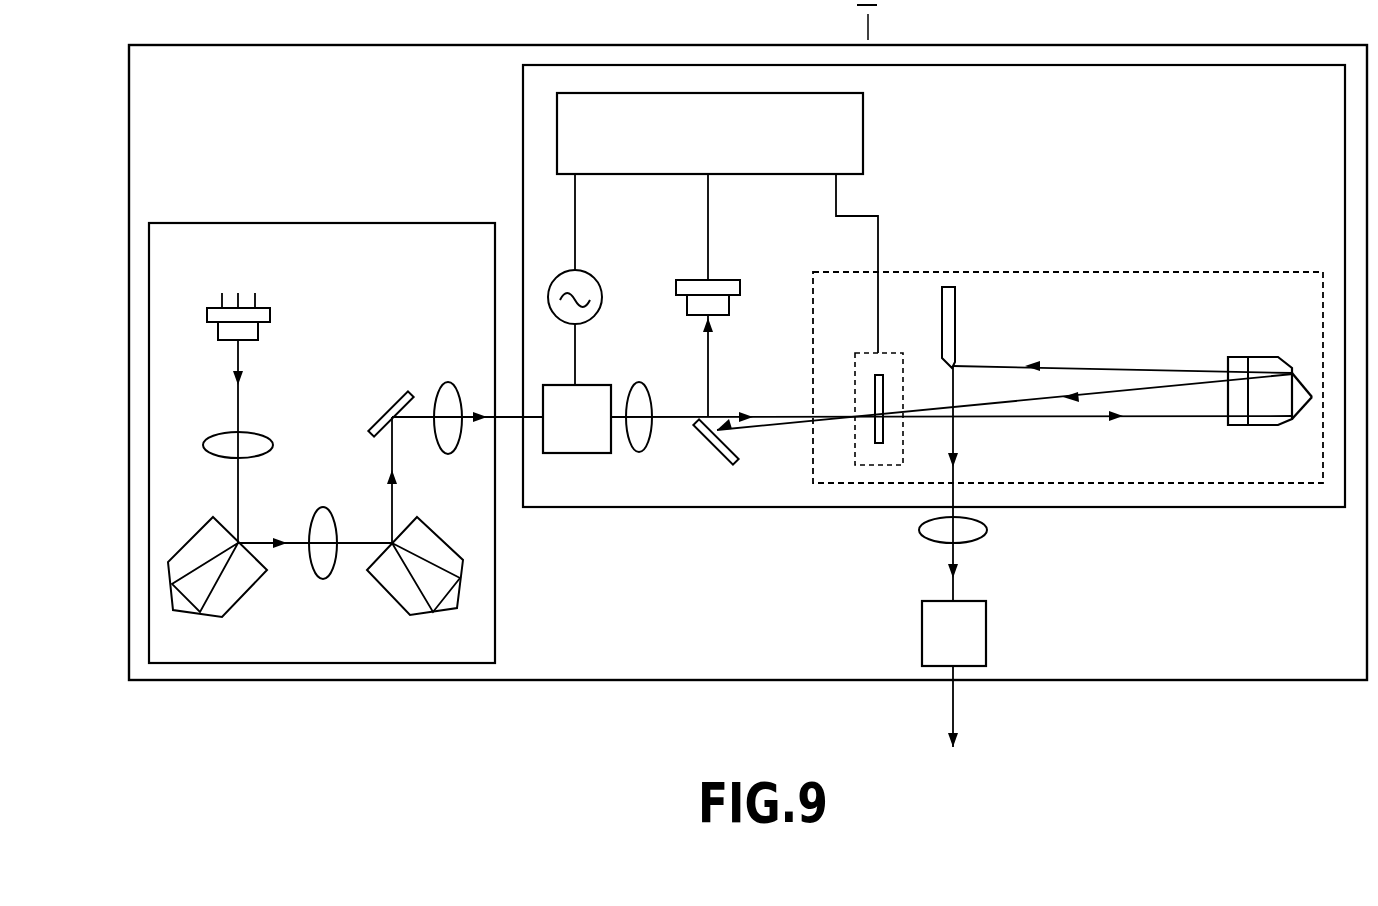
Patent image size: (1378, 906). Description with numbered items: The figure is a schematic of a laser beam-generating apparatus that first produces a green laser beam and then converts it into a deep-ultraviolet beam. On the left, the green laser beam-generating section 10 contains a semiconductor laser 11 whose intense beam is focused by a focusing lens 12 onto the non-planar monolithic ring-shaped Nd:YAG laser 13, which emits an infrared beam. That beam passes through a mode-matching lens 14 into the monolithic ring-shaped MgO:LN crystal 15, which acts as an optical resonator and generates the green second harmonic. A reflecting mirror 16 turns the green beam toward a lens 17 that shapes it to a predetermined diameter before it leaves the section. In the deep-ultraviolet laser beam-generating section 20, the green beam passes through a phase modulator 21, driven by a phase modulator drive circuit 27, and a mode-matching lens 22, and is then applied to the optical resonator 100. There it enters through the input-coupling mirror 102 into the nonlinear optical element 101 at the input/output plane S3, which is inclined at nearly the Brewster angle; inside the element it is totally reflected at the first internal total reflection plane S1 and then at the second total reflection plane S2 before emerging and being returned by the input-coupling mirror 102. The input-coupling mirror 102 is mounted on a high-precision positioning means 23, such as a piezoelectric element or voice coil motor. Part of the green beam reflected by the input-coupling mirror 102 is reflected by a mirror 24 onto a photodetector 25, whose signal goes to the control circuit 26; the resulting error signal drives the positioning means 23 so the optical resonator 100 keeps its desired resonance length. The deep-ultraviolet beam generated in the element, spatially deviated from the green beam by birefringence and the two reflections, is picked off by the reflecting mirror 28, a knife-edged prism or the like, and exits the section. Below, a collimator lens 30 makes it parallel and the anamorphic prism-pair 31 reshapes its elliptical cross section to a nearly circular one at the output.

The green laser beam-generating section 10 is at (188, 223).
The semiconductor laser 11 is at (258, 332).
The focusing lens 12 is at (270, 432).
The Nd:YAG laser 13 is at (188, 540).
The mode-matching lens 14 is at (323, 507).
The MgO:LN crystal 15 is at (449, 539).
The reflecting mirror 16 is at (383, 406).
The lens 17 is at (451, 382).
The deep-ultraviolet laser beam-generating section 20 is at (563, 508).
The phase modulator 21 is at (604, 384).
The mode-matching lens 22 is at (650, 384).
The high-precision positioning means 23 is at (905, 352).
The mirror 24 is at (707, 442).
The photodetector 25 is at (741, 280).
The control circuit 26 is at (863, 138).
The phase modulator drive circuit 27 is at (598, 276).
The reflecting mirror 28 is at (955, 327).
The collimator lens 30 is at (987, 530).
The anamorphic prism-pair 31 is at (986, 637).
The optical resonator 100 is at (1102, 270).
The nonlinear optical element 101 is at (1255, 423).
The input-coupling mirror 102 is at (875, 387).
The first internal total reflection plane S1 is at (1296, 419).
The second total reflection plane S2 is at (1293, 372).
The input/output plane S3 is at (1240, 357).